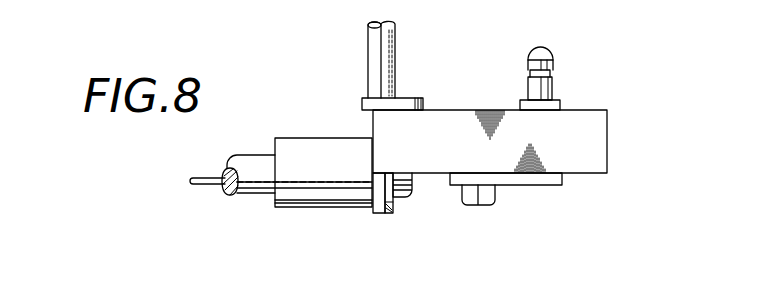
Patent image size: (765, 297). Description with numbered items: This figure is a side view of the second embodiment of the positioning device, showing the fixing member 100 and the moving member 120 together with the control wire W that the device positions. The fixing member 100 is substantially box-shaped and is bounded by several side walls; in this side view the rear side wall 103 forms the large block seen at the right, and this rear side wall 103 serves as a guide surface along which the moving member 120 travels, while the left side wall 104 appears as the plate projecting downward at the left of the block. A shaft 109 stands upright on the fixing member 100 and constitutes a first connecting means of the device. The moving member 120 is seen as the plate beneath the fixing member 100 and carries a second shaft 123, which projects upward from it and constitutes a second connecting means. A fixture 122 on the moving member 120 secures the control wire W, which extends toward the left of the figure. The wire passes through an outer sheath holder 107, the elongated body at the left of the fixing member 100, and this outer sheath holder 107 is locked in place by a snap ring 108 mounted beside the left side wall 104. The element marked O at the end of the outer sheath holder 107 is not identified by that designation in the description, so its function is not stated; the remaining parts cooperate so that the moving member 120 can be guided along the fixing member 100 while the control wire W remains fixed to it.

The control wire W is at (200, 190).
The collet O is at (243, 196).
The fixing member 100 is at (470, 110).
The rear side wall 103 is at (600, 148).
The left side wall 104 is at (378, 214).
The outer sheath holder 107 is at (306, 138).
The snap ring 108 is at (388, 214).
The shaft 109 is at (396, 29).
The moving member 120 is at (530, 186).
The fixture 122 is at (487, 207).
The shaft 123 is at (554, 85).